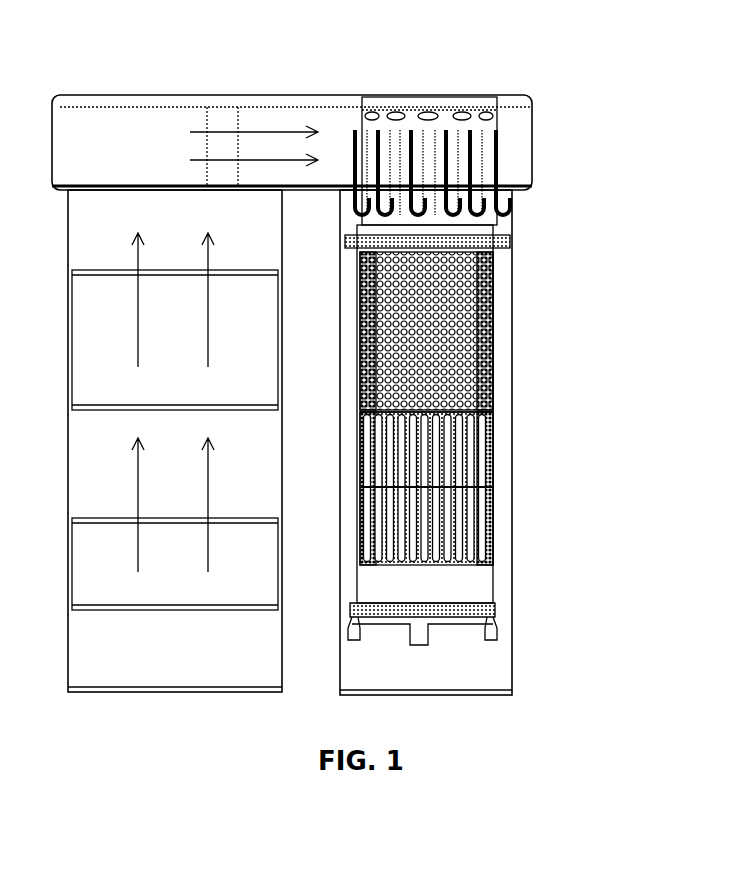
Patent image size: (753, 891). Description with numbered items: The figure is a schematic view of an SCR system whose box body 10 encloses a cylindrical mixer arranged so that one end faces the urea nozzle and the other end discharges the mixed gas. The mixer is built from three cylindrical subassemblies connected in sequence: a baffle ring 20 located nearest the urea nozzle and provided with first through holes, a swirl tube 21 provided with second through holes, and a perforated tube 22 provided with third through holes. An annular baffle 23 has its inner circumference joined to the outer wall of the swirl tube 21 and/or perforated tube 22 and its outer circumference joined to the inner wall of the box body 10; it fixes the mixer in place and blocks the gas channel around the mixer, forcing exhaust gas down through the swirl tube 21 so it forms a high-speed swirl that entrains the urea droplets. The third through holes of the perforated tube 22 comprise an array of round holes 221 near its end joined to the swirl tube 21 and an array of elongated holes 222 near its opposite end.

The box body 10 is at (300, 97).
The baffle ring 20 is at (505, 97).
The swirl tube 21 is at (526, 176).
The perforated tube 22 is at (490, 487).
The annular baffle 23 is at (505, 242).
The round holes 221 is at (493, 349).
The elongated holes 222 is at (493, 533).